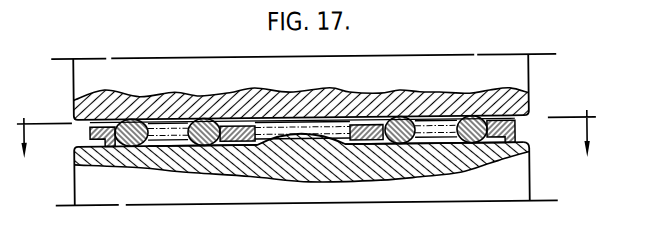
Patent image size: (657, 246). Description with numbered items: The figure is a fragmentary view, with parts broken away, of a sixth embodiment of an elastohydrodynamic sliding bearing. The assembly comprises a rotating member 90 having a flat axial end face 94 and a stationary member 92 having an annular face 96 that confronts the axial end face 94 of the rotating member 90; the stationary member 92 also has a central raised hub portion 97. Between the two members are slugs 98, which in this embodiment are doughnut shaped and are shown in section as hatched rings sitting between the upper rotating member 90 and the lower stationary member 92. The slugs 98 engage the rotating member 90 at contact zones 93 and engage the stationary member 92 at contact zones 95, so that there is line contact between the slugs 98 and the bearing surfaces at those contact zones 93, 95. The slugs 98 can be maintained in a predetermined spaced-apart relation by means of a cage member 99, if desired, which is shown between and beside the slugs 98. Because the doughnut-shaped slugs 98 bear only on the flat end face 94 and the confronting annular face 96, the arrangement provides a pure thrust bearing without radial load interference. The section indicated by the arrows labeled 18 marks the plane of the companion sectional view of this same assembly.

The rotating member 90 is at (178, 64).
The stationary member 92 is at (202, 196).
The contact zones 93 is at (202, 105).
The flat axial end face 94 is at (502, 118).
The contact zones 95 is at (202, 147).
The annular face 96 is at (497, 145).
The central raised hub portion 97 is at (307, 128).
The slugs 98 is at (133, 112).
The cage member 99 is at (515, 134).
The section line 18- 18 is at (309, 127).